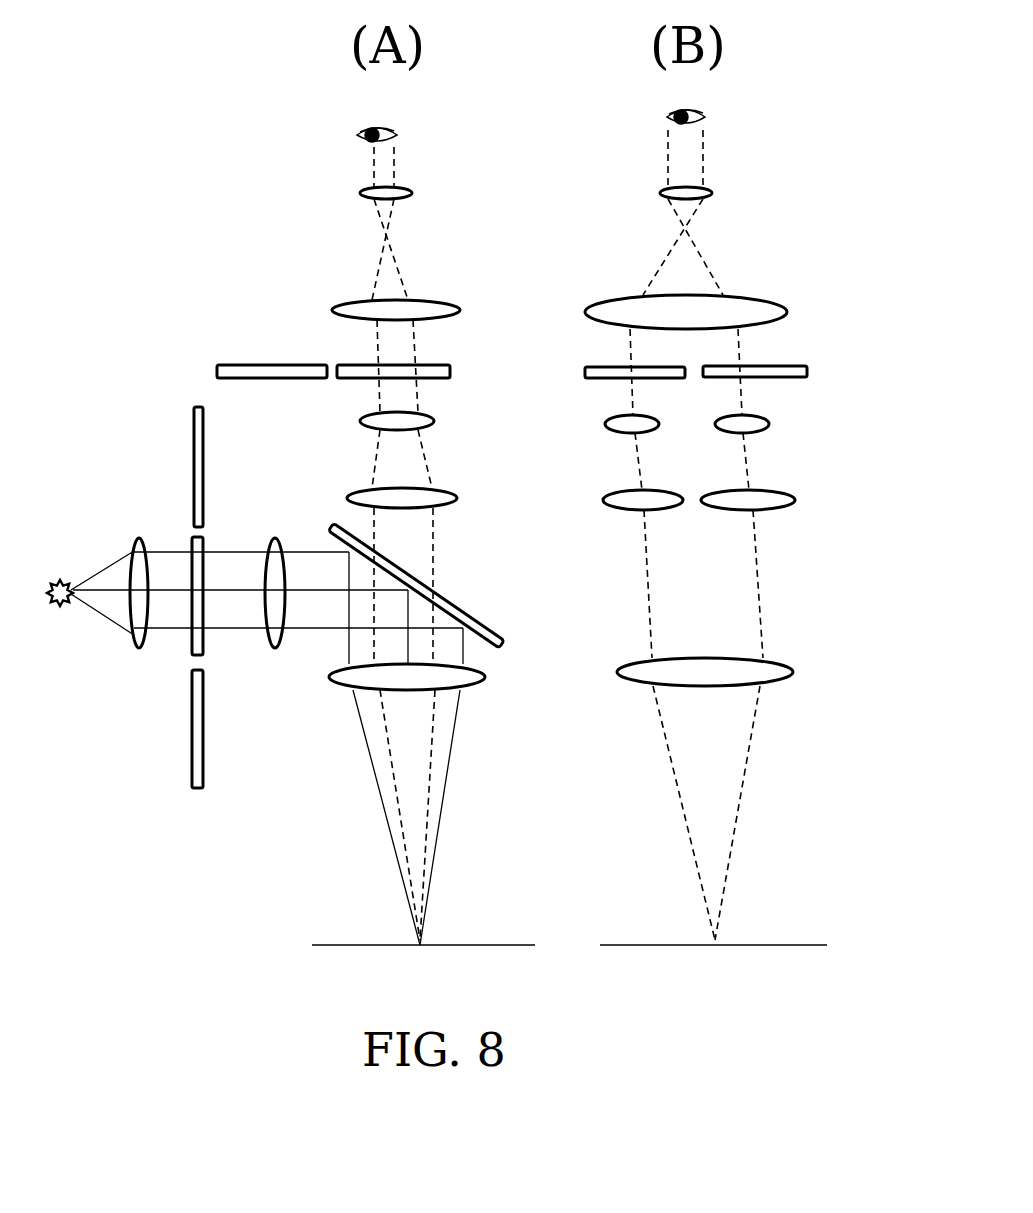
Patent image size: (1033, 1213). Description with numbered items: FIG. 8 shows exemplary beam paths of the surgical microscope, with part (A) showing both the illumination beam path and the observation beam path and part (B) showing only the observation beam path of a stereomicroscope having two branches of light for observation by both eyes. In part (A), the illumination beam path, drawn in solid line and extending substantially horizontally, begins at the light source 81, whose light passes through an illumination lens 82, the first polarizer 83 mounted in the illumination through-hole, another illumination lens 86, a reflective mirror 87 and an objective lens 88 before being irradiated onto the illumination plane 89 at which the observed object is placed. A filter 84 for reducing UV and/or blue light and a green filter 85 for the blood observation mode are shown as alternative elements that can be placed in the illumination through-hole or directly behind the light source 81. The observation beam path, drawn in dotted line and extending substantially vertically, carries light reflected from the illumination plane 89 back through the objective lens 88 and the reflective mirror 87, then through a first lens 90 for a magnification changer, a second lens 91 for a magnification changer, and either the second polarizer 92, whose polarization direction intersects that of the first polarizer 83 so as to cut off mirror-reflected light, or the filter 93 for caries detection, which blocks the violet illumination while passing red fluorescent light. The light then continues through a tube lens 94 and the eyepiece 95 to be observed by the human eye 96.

The light source 81 is at (60, 607).
The illumination lens 82 is at (138, 580).
The first polarizer 83 is at (187, 596).
The filter 84 is at (186, 467).
The green filter 85 is at (184, 729).
The illumination lens 86 is at (274, 578).
The reflective mirror 87 is at (416, 585).
The objective lens 88 is at (577, 674).
The illumination plane 89 is at (582, 948).
The first lens for a magnification changer 90 is at (584, 500).
The second lens for a magnification changer 91 is at (576, 426).
The second polarizer 92 is at (587, 372).
The filter for caries detection 93 is at (254, 372).
The tube lens 94 is at (577, 312).
The eyepiece 95 is at (536, 193).
The human eye 96 is at (531, 128).